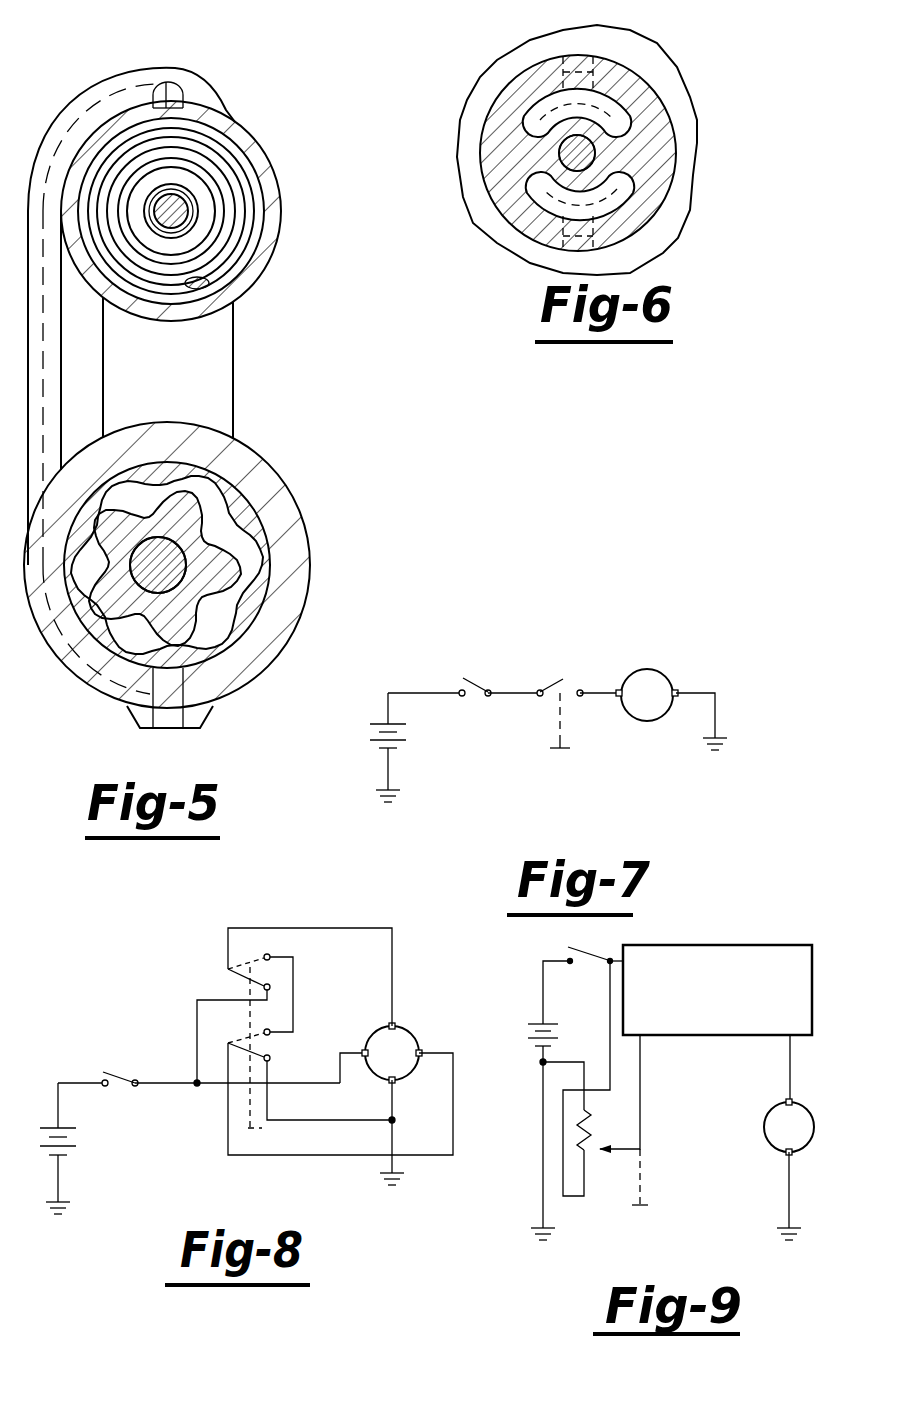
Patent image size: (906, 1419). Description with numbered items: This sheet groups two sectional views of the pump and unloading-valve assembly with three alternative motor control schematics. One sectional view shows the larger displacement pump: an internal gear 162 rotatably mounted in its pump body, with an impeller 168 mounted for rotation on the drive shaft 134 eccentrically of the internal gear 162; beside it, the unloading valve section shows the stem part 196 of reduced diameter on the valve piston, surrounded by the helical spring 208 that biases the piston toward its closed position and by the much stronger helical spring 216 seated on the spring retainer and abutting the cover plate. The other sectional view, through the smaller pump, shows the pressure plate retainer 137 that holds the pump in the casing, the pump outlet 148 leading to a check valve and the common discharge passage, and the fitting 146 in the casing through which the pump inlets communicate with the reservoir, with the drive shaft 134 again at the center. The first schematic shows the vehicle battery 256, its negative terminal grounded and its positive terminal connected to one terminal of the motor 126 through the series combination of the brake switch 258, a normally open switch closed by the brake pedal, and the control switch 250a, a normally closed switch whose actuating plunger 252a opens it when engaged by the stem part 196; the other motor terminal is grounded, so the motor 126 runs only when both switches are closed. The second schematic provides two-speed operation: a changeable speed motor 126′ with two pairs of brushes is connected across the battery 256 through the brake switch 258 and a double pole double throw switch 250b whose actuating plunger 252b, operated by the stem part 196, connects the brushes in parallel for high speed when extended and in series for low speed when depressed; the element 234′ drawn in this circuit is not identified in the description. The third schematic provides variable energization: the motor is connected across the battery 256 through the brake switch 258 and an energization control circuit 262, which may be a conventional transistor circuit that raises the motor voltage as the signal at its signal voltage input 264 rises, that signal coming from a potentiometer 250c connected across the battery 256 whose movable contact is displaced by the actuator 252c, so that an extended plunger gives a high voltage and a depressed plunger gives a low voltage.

In FIG. 5, the stem part 196 is at (194, 207).
In FIG. 5, the helical spring 208 is at (199, 207).
In FIG. 5, the helical spring 216 is at (238, 238).
In FIG. 5, the drive shaft 134 is at (190, 548).
In FIG. 6, the drive shaft 134 is at (598, 152).
In FIG. 5, the impeller 168 is at (224, 570).
In FIG. 5, the internal gear 162 is at (270, 590).
In FIG. 6, the outlet 148 is at (628, 58).
In FIG. 6, the fitting 146 is at (598, 229).
In FIG. 6, the pressure plate retainer 137 is at (498, 205).
In FIG. 7, the brake switch 258 is at (481, 670).
In FIG. 8, the brake switch 258 is at (185, 1017).
In FIG. 9, the brake switch 258 is at (578, 968).
In FIG. 7, the control switch 250a is at (566, 678).
In FIG. 7, the motor 126 is at (655, 667).
In FIG. 7, the vehicle battery 256 is at (410, 757).
In FIG. 8, the vehicle battery 256 is at (72, 1124).
In FIG. 9, the vehicle battery 256 is at (524, 1047).
In FIG. 7, the actuating plunger 252a is at (565, 735).
In FIG. 8, the double pole double throw switch 250b is at (299, 968).
In FIG. 8, the actuating plunger 252b is at (247, 1115).
In FIG. 8, the coupling 234′ is at (287, 1063).
In FIG. 8, the changeable speed motor 126′ is at (416, 1033).
In FIG. 9, the energization control circuit 262 is at (758, 907).
In FIG. 9, the signal voltage input 264 is at (641, 1070).
In FIG. 9, the potentiometer 250c is at (598, 1158).
In FIG. 9, the actuator 252c is at (636, 1202).